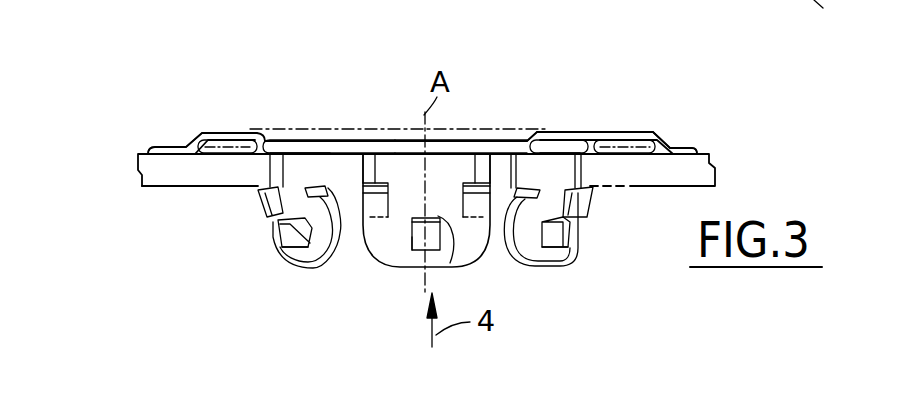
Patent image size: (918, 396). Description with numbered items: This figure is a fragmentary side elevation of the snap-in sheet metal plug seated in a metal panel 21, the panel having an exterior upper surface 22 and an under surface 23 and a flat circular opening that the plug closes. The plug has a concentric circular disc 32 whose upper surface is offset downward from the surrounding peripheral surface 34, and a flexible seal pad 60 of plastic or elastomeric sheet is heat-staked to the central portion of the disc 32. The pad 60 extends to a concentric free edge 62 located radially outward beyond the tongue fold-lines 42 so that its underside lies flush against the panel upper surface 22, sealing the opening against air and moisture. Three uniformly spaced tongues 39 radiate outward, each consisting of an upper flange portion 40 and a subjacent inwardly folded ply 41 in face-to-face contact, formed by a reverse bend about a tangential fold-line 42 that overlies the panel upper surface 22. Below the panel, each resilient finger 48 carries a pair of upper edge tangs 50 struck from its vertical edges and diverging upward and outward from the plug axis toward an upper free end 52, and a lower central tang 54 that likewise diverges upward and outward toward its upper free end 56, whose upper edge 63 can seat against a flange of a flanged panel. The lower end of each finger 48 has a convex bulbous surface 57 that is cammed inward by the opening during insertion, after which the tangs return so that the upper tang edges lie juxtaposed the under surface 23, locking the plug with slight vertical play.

The metal panel 21 is at (137, 175).
The upper surface 22 is at (155, 150).
The under surface 23 is at (165, 188).
The circular disc 32 is at (395, 148).
The peripheral surface 34 is at (565, 138).
The tongue 39 is at (280, 141).
The flange portion 40 is at (300, 145).
The ply 41 is at (278, 160).
The fold-line 42 is at (220, 145).
The finger 48 is at (367, 258).
The edge tang 50 is at (310, 212).
The upper free end 52 is at (313, 188).
The central tang 54 is at (292, 243).
The upper free end 56 is at (282, 226).
The bulbous surface 57 is at (300, 260).
The seal pad 60 is at (663, 127).
The free edge 62 is at (150, 154).
The upper edge 63 is at (310, 270).